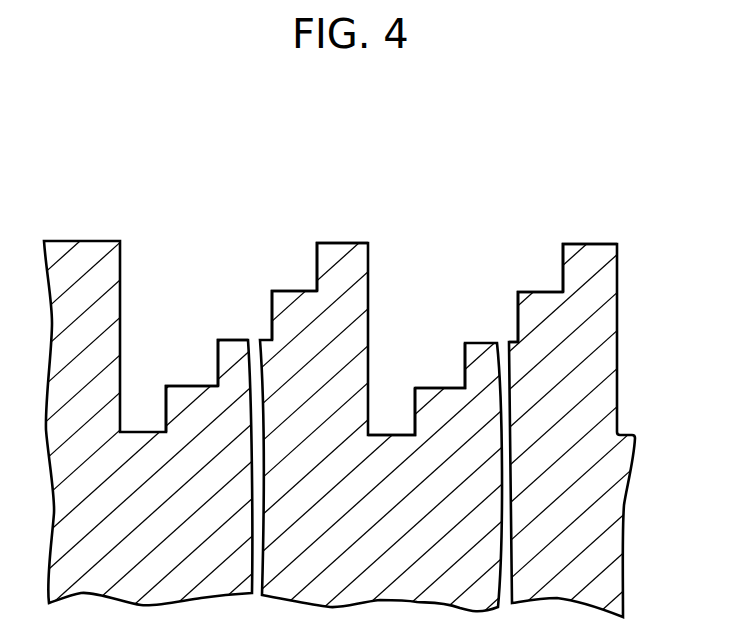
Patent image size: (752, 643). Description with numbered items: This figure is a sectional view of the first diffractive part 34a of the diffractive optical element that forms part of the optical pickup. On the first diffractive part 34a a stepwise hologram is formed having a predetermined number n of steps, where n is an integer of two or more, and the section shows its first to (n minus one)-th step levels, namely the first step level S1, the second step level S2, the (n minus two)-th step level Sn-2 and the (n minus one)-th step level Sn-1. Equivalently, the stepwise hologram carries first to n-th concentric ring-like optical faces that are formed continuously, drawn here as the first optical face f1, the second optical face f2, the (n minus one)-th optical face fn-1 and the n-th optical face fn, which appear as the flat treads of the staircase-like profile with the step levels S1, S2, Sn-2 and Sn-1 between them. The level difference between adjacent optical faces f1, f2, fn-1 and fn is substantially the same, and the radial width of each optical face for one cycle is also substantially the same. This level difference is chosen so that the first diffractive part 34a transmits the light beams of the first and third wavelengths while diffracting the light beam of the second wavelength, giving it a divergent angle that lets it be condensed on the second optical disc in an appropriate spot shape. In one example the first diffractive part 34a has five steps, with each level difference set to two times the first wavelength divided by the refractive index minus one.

The first diffractive part 34a is at (430, 173).
The first step level S1 is at (342, 243).
The second step level S2 is at (288, 291).
The (n-2)-th step level Sn-2 is at (230, 340).
The (n-1)-th step level Sn-1 is at (183, 386).
The n-th optical face fn is at (393, 435).
The (n-1)-th optical face fn-1 is at (441, 388).
The second optical face f2 is at (540, 292).
The first optical face f1 is at (595, 244).